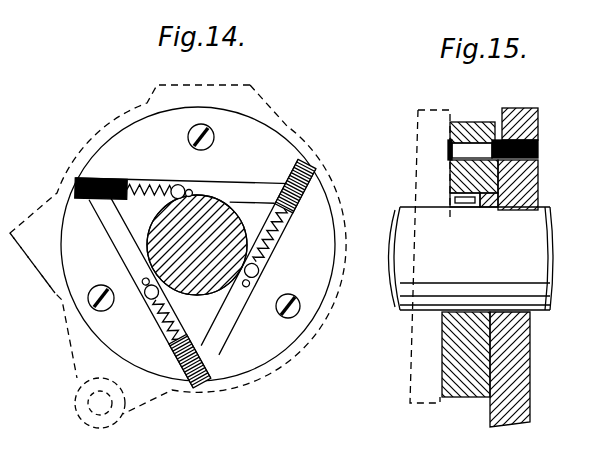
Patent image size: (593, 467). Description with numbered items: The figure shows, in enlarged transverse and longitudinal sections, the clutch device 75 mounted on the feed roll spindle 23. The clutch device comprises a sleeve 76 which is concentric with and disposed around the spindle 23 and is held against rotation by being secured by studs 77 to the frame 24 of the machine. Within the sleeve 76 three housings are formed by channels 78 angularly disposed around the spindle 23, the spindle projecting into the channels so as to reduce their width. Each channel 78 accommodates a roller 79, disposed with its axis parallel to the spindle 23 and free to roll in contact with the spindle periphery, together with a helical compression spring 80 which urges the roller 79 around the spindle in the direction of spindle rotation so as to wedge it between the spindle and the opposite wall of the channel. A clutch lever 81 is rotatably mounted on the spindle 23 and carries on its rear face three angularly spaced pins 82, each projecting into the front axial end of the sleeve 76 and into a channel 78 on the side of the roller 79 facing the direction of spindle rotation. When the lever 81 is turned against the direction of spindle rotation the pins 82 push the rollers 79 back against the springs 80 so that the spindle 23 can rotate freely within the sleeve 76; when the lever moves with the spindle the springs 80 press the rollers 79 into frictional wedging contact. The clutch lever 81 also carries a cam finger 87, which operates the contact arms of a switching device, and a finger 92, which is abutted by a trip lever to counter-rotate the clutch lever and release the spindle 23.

In FIG. 14, the feed roll spindle 23 is at (213, 291).
In FIG. 15, the feed roll spindle 23 is at (502, 259).
In FIG. 15, the frame 24 is at (537, 125).
In FIG. 15, the clutch device 75 is at (480, 123).
In FIG. 14, the sleeve 76 is at (332, 203).
In FIG. 15, the sleeve 76 is at (463, 388).
In FIG. 14, the studs 77 is at (188, 135).
In FIG. 15, the studs 77 is at (452, 151).
In FIG. 14, the channels 78 is at (258, 195).
In FIG. 15, the channels 78 is at (537, 196).
In FIG. 14, the roller 79 is at (179, 183).
In FIG. 15, the roller 79 is at (537, 173).
In FIG. 14, the helical compression spring 80 is at (151, 178).
In FIG. 14, the clutch lever 81 is at (264, 110).
In FIG. 15, the clutch lever 81 is at (420, 351).
In FIG. 14, the pins 82 is at (195, 187).
In FIG. 15, the pins 82 is at (460, 207).
In FIG. 14, the cam finger 87 is at (35, 250).
In FIG. 14, the finger 92 is at (78, 414).